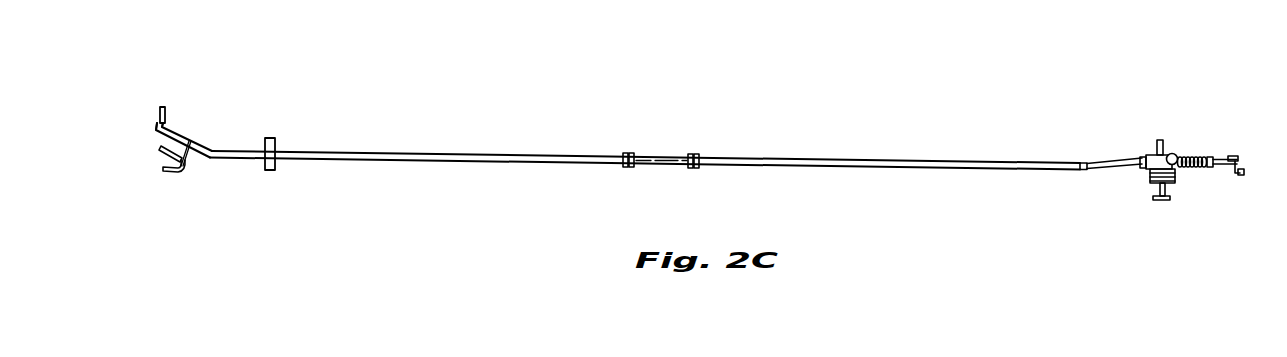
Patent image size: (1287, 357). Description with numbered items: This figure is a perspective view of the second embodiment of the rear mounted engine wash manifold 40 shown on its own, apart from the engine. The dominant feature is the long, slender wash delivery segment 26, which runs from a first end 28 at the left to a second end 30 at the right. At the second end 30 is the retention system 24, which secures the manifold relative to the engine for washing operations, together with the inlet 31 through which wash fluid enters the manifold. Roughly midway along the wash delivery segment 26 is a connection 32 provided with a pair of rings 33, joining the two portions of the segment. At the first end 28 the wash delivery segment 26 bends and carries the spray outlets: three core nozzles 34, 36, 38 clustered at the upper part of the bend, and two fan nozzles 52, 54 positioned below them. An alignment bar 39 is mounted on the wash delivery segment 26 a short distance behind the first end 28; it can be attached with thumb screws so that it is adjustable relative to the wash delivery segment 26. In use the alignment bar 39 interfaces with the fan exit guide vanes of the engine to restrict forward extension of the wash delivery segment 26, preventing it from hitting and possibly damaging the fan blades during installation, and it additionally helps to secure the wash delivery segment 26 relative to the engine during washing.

The retention system 24 is at (1136, 220).
The wash delivery segment 26 is at (385, 160).
The first end 28 is at (310, 81).
The second end 30 is at (1181, 222).
The inlet 31 is at (1235, 158).
The connection 32 is at (676, 123).
The rings 33 is at (627, 168).
The core nozzle 34 is at (170, 123).
The core nozzle 36 is at (168, 115).
The core nozzle 38 is at (164, 110).
The alignment bar 39 is at (275, 140).
The rear mounted engine wash manifold 40 is at (1112, 53).
The fan nozzle 52 is at (162, 171).
The fan nozzle 54 is at (160, 148).